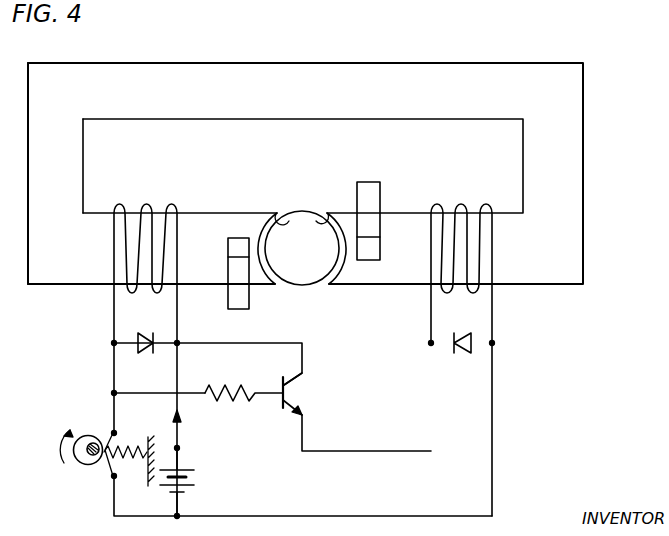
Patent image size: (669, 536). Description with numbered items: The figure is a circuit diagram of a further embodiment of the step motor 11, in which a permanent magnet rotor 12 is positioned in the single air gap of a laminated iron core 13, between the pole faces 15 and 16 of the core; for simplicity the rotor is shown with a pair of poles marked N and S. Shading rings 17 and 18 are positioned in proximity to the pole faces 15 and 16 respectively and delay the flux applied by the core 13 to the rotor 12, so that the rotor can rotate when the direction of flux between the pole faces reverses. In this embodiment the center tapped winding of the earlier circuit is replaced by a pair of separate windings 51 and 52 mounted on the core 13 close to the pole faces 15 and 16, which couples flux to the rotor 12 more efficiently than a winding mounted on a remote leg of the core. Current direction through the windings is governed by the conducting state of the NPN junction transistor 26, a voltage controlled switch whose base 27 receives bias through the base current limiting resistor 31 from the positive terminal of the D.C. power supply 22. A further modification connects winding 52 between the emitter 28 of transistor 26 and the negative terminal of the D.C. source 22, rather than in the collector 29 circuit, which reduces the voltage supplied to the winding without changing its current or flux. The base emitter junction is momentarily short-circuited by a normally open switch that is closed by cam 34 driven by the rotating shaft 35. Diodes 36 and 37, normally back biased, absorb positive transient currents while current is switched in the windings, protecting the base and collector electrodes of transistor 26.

The step motor 11 is at (346, 173).
The permanent magnet rotor 12 is at (311, 257).
The laminated iron core 13 is at (565, 143).
The pole face 15 is at (282, 213).
The pole face 16 is at (322, 213).
The shading ring 17 is at (240, 309).
The shading ring 18 is at (369, 187).
The D.C. power supply 22 is at (192, 478).
The NPN junction transistor 26 is at (304, 394).
The base 27 is at (283, 384).
The emitter 28 is at (291, 411).
The collector 29 is at (300, 376).
The base current limiting resistor 31 is at (231, 386).
The cam 34 is at (84, 461).
The rotating shaft 35 is at (93, 442).
The diode 36 is at (141, 361).
The diode 37 is at (460, 356).
The winding 51 is at (147, 208).
The winding 52 is at (458, 209).